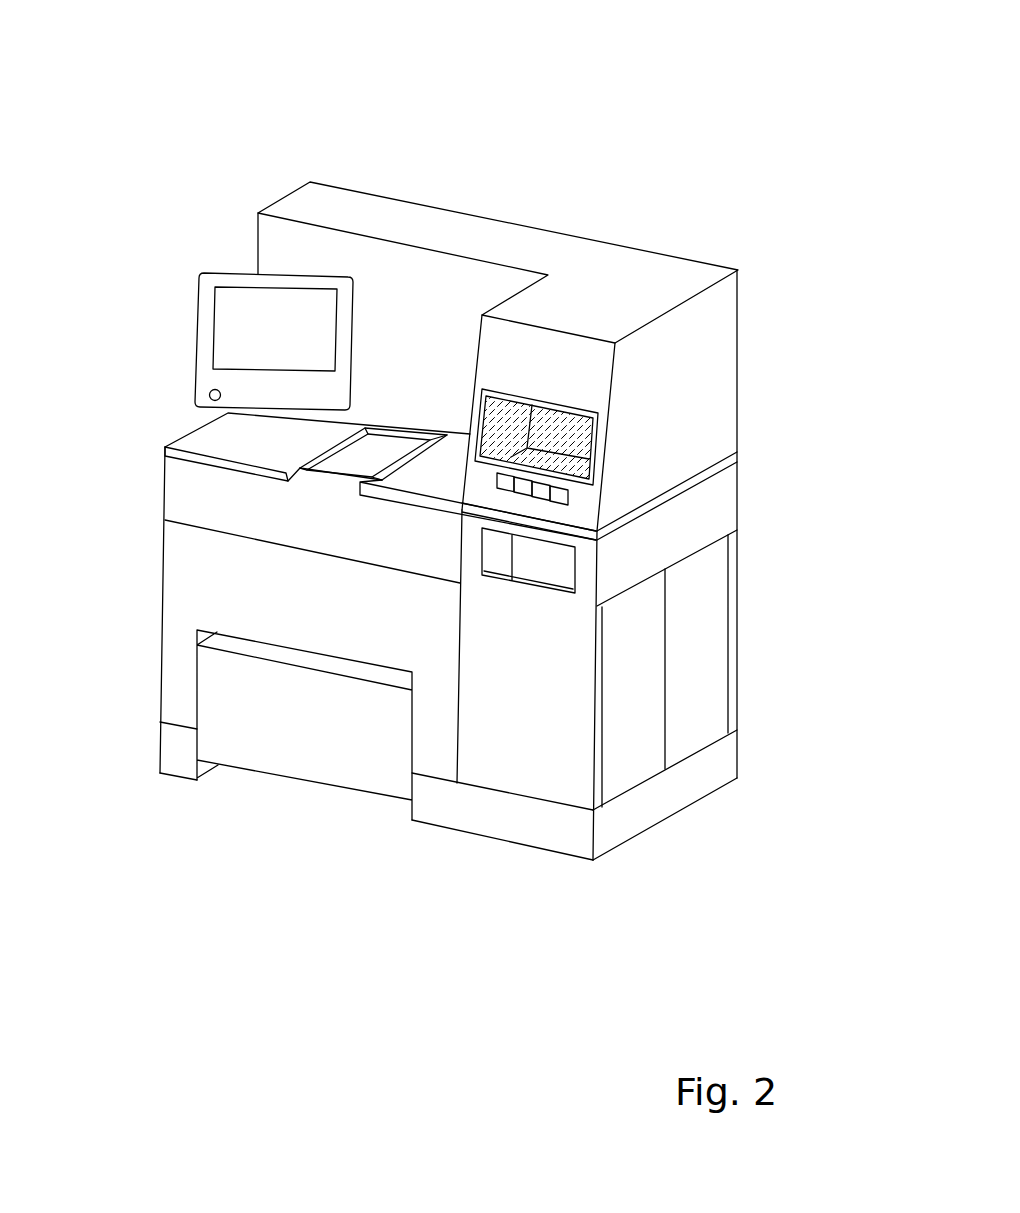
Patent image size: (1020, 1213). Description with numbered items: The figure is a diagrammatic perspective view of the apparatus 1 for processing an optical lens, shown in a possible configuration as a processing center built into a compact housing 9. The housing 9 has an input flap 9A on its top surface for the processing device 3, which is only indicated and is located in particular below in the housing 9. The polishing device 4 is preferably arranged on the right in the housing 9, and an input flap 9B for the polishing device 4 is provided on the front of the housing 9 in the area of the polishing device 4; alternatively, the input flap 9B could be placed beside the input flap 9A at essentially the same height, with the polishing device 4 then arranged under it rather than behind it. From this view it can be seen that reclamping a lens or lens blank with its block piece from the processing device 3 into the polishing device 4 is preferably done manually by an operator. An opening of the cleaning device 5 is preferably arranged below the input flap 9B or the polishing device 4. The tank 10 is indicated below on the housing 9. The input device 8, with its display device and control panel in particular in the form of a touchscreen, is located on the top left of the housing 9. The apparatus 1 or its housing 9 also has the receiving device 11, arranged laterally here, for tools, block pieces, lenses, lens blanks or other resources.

The apparatus 1 is at (648, 117).
The processing device 3 is at (185, 490).
The polishing device 4 is at (723, 335).
The cleaning device 5 is at (540, 558).
The input device 8 is at (202, 263).
The housing 9 is at (743, 418).
The input flap 9A is at (382, 448).
The input flap 9B is at (557, 442).
The tank 10 is at (275, 728).
The receiving device 11 is at (695, 723).